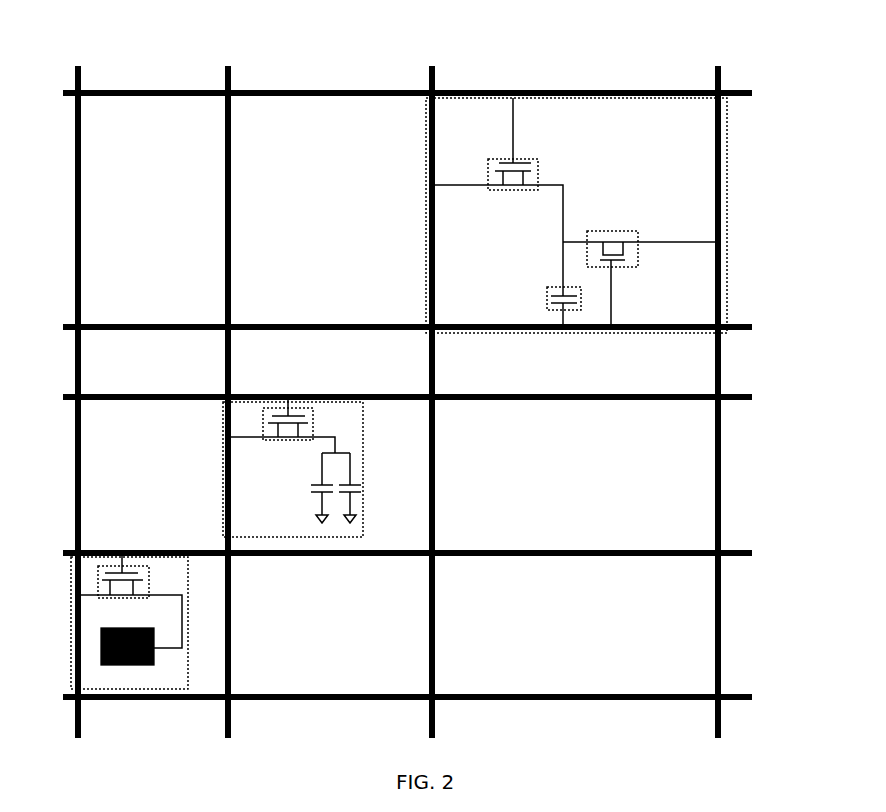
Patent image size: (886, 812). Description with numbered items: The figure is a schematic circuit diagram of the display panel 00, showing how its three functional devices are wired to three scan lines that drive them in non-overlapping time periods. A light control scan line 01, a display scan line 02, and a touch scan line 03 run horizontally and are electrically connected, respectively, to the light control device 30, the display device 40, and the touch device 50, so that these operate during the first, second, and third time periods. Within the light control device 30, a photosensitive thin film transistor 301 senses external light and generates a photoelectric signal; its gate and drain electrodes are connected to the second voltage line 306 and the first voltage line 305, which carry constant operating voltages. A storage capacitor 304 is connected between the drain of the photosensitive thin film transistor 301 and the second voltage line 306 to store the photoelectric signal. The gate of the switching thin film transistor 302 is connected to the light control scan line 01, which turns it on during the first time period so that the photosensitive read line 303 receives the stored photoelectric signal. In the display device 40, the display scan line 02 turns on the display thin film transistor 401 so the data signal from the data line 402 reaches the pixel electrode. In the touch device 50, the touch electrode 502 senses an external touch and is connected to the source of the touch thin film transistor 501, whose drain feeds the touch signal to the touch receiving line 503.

The display panel 00 is at (100, 63).
The light control scan line 01 is at (750, 92).
The display scan line 02 is at (750, 396).
The touch scan line 03 is at (745, 551).
The light control device 30 is at (727, 162).
The photosensitive thin film transistor 301 is at (598, 230).
The switching thin film transistor 302 is at (521, 158).
The photosensitive read line 303 is at (435, 82).
The storage capacitor 304 is at (548, 290).
The first voltage line 305 is at (721, 352).
The second voltage line 306 is at (750, 324).
The display device 40 is at (363, 458).
The display thin film transistor 401 is at (279, 442).
The data line 402 is at (230, 375).
The touch device 50 is at (188, 590).
The touch thin film transistor 501 is at (150, 582).
The touch electrode 502 is at (143, 665).
The touch receiving line 503 is at (80, 503).